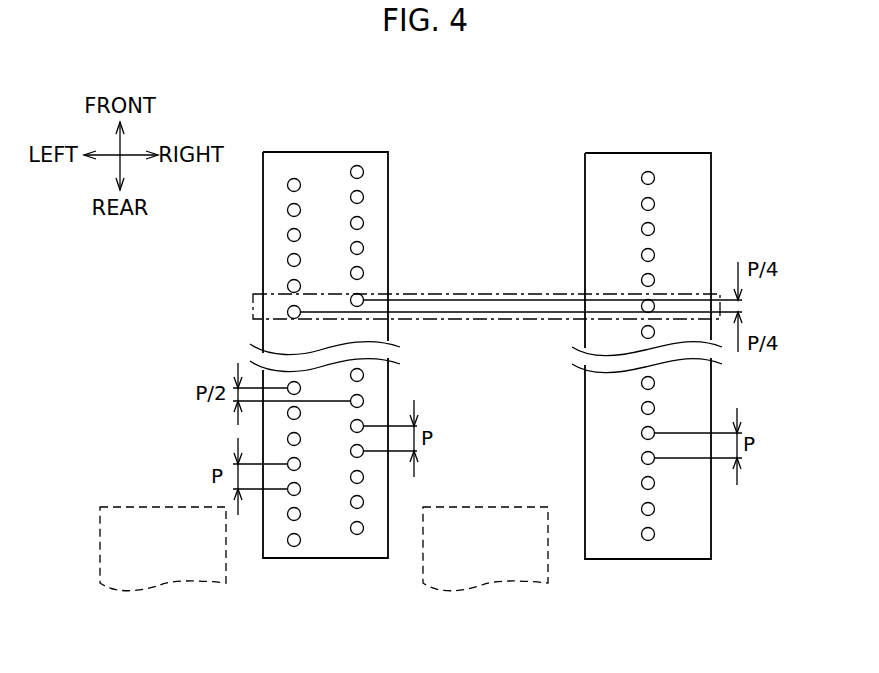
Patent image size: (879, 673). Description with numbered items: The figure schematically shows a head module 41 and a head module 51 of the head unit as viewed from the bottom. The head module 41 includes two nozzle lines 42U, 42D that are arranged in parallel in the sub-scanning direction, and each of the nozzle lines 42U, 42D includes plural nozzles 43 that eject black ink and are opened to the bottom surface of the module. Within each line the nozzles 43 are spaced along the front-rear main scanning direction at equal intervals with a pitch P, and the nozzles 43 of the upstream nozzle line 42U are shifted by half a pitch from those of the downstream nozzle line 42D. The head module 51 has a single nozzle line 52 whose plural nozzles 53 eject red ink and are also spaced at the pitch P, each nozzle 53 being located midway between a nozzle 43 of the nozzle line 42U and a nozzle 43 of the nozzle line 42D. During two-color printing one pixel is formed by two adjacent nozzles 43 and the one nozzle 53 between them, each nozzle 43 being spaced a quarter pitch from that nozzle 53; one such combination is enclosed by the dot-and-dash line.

The head module 41 is at (325, 152).
The head module 51 is at (648, 153).
The nozzle 43 is at (287, 235).
The nozzle 53 is at (655, 229).
The nozzle line 42U is at (296, 564).
The nozzle line 42D is at (357, 554).
The nozzle line 52 is at (647, 559).